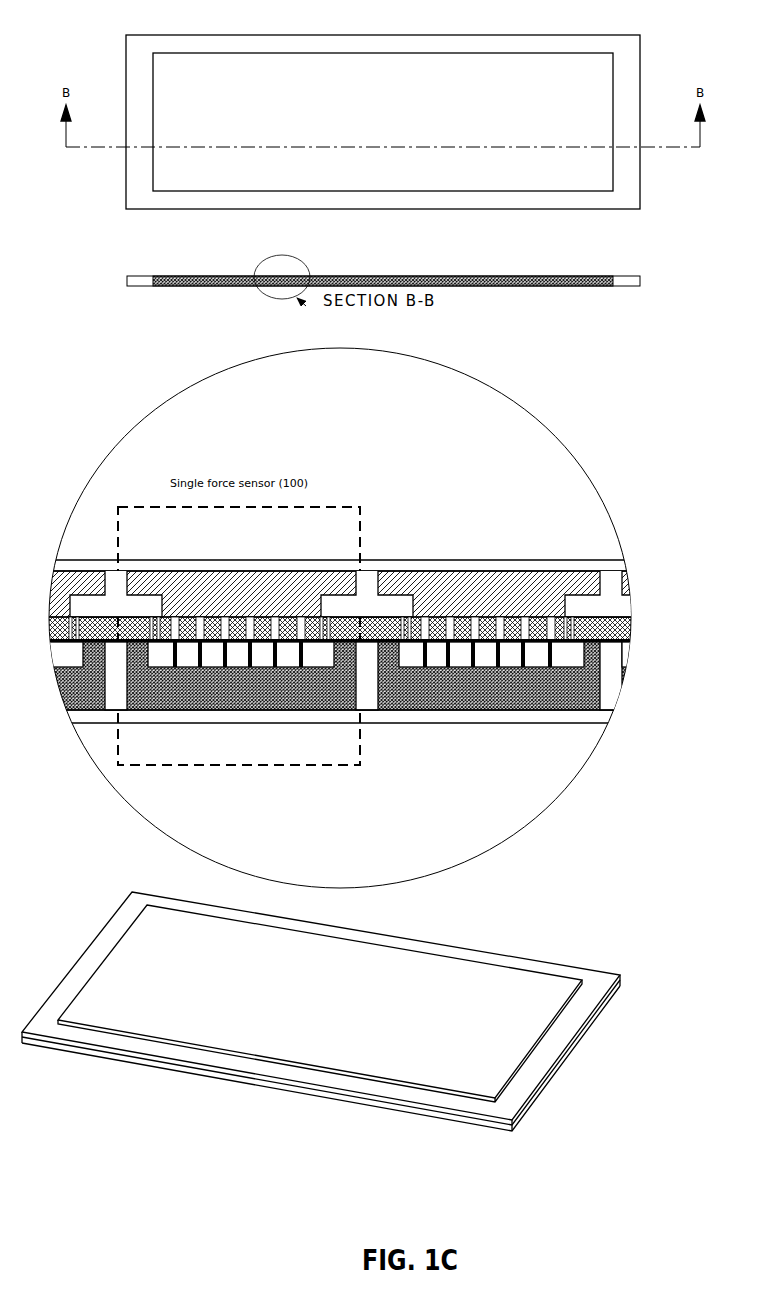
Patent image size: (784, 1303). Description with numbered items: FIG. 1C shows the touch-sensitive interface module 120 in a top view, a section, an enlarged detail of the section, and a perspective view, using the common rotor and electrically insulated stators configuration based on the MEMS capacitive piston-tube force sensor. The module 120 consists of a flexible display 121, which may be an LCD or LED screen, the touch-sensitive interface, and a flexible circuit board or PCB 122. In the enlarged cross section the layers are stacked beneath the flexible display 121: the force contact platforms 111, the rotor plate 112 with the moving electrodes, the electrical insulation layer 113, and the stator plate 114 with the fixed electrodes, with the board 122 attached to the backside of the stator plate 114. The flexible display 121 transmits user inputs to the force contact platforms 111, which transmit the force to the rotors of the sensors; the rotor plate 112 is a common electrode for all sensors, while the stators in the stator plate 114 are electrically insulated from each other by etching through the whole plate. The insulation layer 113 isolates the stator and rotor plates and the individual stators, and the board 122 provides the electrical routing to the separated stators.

The force contact platform 111 is at (237, 588).
The rotor plate 112 is at (211, 626).
The electrical insulation layer 113 is at (367, 645).
The stator plate 114 is at (255, 697).
The touch-sensitive interface module 120 is at (578, 1122).
The flexible display panel 121 is at (583, 558).
The flexible circuit board 122 is at (475, 723).